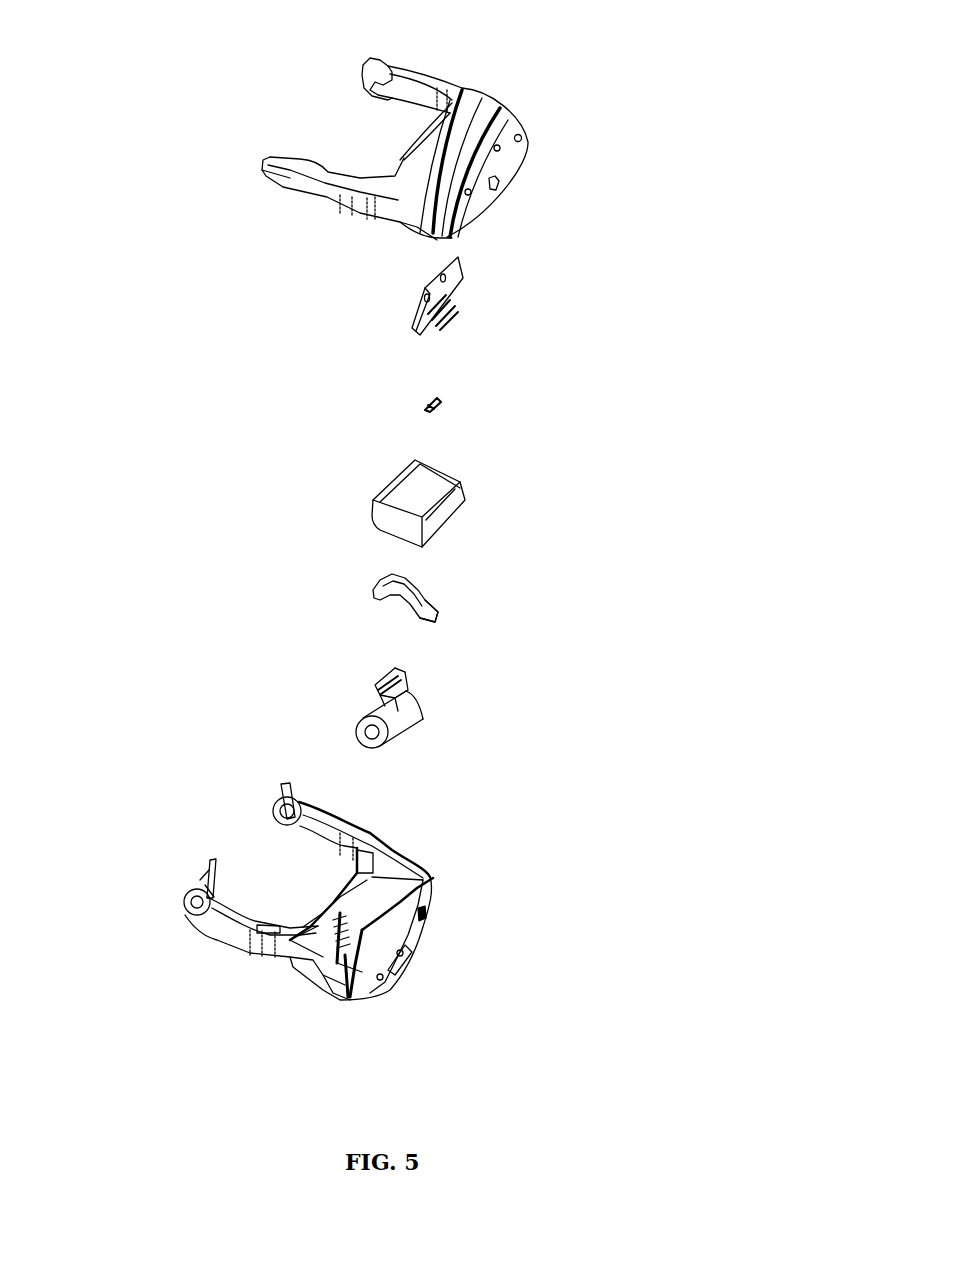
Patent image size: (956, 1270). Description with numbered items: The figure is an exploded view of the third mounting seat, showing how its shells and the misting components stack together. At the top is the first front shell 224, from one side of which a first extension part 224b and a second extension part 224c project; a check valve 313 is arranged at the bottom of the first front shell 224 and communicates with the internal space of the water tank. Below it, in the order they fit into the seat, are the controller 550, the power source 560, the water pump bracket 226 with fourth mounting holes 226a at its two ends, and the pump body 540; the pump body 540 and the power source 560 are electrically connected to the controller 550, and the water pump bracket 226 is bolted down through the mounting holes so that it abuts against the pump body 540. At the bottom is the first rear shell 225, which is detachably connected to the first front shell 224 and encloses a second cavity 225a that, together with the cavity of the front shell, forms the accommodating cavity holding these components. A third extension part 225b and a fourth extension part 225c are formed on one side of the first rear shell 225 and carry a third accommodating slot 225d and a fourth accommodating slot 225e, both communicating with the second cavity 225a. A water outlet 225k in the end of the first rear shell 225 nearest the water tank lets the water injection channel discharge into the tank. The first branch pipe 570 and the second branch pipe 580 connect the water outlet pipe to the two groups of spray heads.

The first front shell 224 is at (419, 128).
The first extension part 224b is at (350, 202).
The second extension part 224c is at (427, 77).
The check valve 313 is at (525, 173).
The controller 550 is at (422, 287).
The power source 560 is at (397, 475).
The water pump bracket 226 is at (486, 573).
The fourth mounting holes 226a is at (437, 603).
The pump body 540 is at (420, 690).
The first rear shell 225 is at (330, 925).
The second cavity 225a is at (435, 887).
The third extension part 225b is at (208, 935).
The fourth extension part 225c is at (278, 795).
The third accommodating slot 225d is at (273, 932).
The fourth accommodating slot 225e is at (358, 830).
The water outlet 225k is at (420, 948).
The first branch pipe 570 is at (177, 897).
The second branch pipe 580 is at (293, 795).